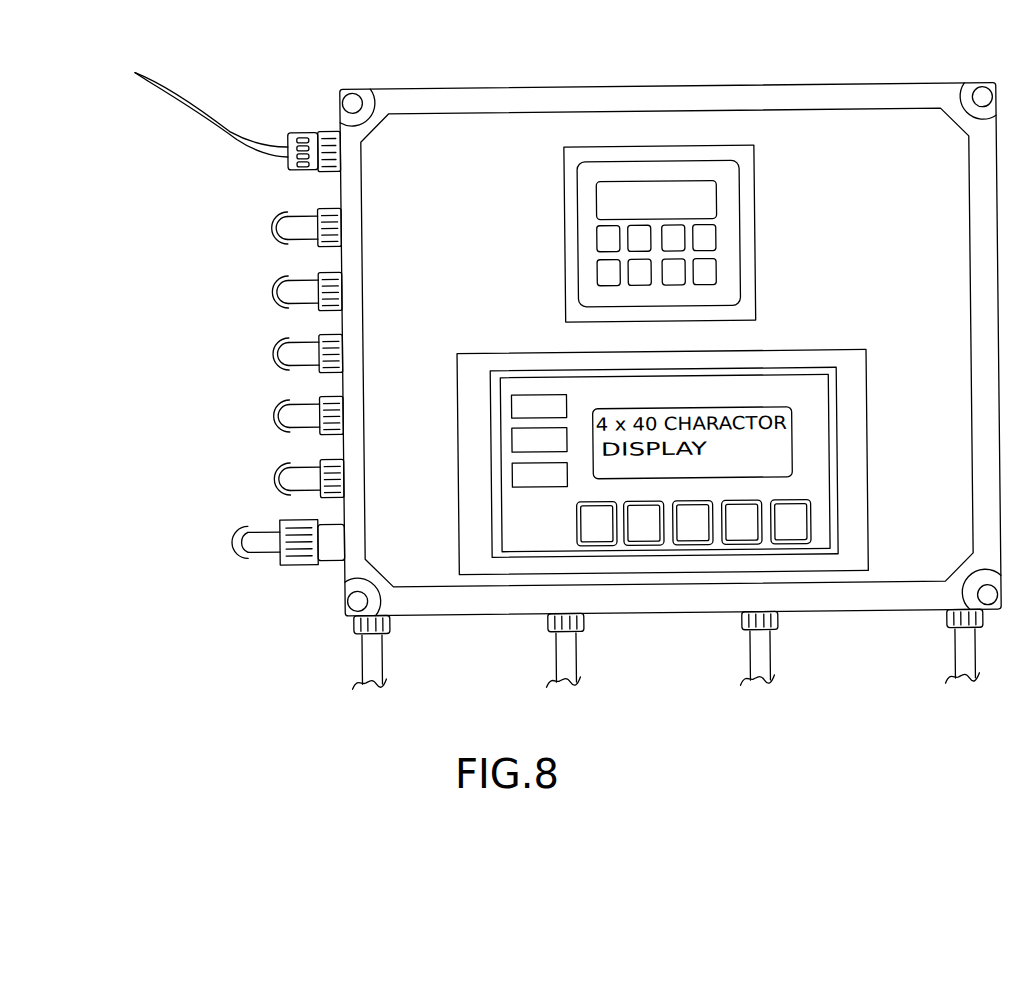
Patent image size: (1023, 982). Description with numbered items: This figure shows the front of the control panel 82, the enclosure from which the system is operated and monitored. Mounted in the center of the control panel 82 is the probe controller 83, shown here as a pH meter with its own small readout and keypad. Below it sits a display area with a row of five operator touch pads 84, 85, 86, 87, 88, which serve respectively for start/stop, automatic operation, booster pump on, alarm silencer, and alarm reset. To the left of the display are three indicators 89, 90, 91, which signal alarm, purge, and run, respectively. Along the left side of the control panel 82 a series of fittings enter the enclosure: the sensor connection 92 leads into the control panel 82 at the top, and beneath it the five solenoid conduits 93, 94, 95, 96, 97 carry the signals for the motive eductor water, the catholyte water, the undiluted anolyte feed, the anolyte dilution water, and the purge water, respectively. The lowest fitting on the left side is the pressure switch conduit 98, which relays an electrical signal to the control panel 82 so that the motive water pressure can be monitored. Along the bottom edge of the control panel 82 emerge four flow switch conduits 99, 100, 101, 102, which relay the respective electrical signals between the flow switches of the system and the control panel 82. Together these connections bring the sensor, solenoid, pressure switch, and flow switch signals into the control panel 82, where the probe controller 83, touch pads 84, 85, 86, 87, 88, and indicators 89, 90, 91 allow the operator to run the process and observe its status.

The control panel 82 is at (716, 86).
The probe controller 83 is at (566, 199).
The operator touch pad 84 is at (594, 539).
The operator touch pad 85 is at (649, 538).
The operator touch pad 86 is at (692, 538).
The operator touch pad 87 is at (739, 537).
The operator touch pad 88 is at (791, 531).
The indicator 89 is at (511, 403).
The indicator 90 is at (517, 436).
The indicator 91 is at (517, 476).
The sensor connection 92 is at (237, 148).
The solenoid conduit 93 is at (269, 228).
The solenoid conduit 94 is at (270, 288).
The solenoid conduit 95 is at (268, 356).
The solenoid conduit 96 is at (268, 414).
The solenoid conduit 97 is at (266, 476).
The pressure switch conduit 98 is at (213, 547).
The flow switch conduit 99 is at (362, 688).
The flow switch conduit 100 is at (565, 684).
The flow switch conduit 101 is at (763, 685).
The flow switch conduit 102 is at (953, 688).